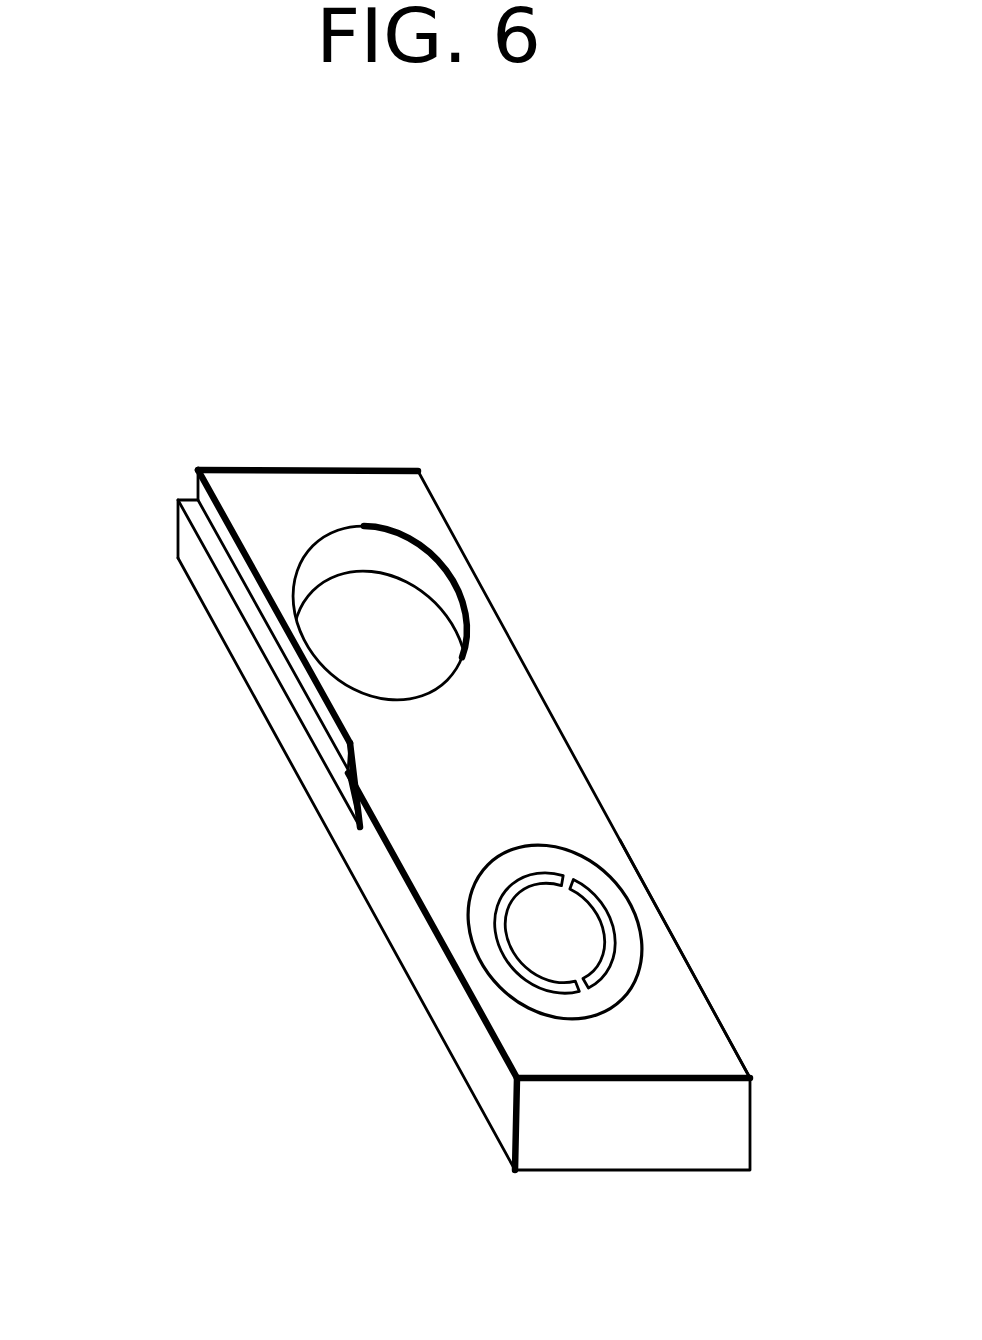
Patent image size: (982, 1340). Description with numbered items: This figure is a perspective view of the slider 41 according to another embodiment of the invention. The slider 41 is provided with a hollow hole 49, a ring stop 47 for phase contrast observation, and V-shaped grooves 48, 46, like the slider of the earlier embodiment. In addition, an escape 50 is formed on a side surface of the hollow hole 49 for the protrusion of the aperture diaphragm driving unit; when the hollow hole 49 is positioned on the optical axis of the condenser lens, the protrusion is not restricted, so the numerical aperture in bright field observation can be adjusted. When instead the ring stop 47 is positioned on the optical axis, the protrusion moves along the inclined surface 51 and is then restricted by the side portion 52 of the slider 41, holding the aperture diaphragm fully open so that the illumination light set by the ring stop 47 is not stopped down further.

The slider 41 is at (474, 820).
The V-shaped groove 46 is at (726, 959).
The ring stop for phase contrast observation 47 is at (603, 930).
The V-shaped groove 48 is at (584, 774).
The hollow hole 49 is at (416, 600).
The escape 50 is at (215, 648).
The inclined surface 51 is at (334, 886).
The side portion 52 is at (346, 864).